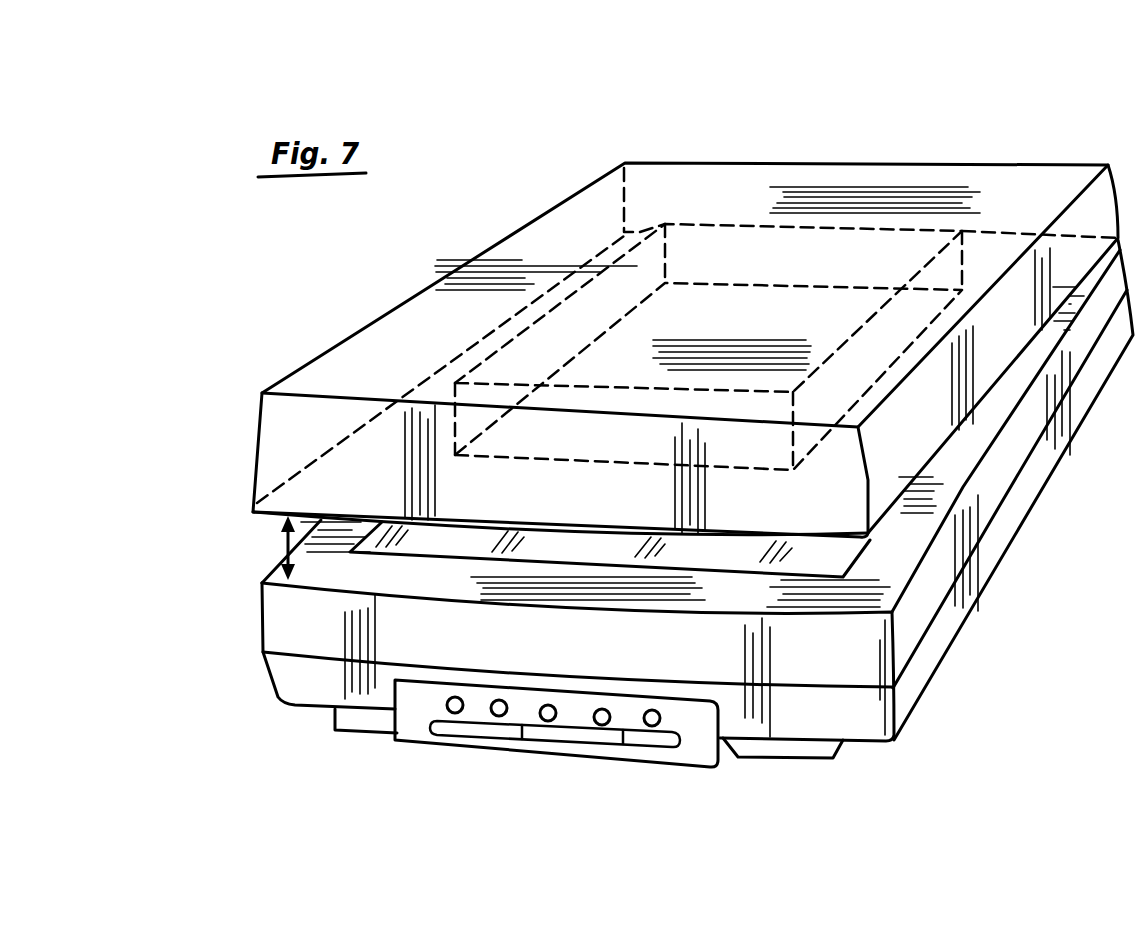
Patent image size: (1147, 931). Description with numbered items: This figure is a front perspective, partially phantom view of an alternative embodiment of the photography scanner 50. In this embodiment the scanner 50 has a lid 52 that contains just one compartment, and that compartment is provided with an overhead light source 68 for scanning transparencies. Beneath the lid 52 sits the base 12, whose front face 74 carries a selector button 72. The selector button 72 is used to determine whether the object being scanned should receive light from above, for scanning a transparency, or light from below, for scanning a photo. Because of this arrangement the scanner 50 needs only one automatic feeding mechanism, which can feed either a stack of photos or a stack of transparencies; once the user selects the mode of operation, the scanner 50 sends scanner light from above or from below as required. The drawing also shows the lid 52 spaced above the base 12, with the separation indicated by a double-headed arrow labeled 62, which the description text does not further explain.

The scanner 50 is at (878, 138).
The lid 52 is at (558, 247).
The overhead light source 68 is at (923, 250).
The lid travel / gap 62 is at (283, 550).
The base 12 is at (937, 572).
The selector button 72 is at (513, 735).
The front face 74 is at (805, 713).